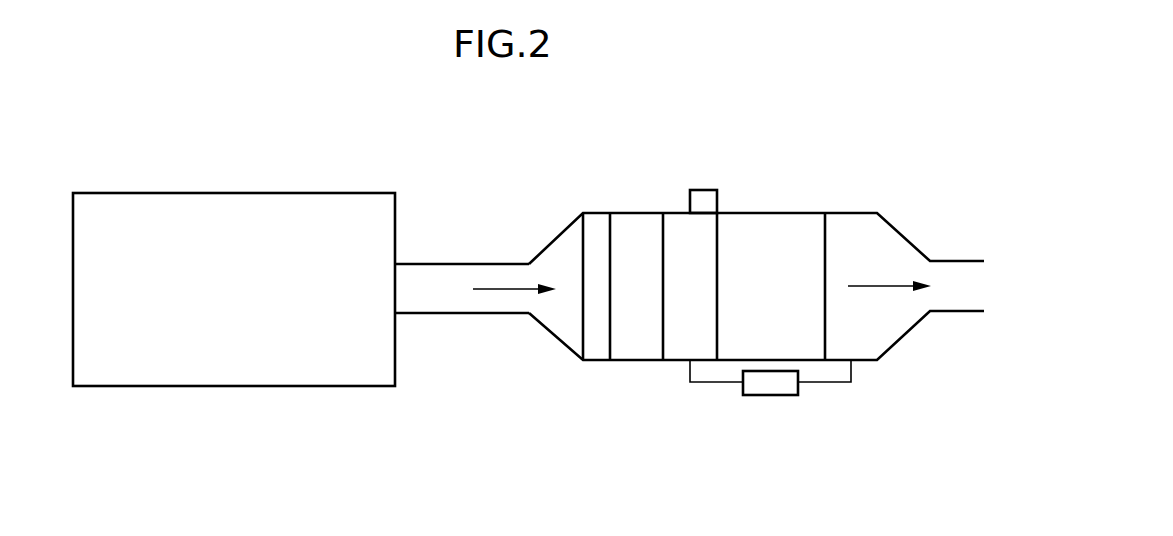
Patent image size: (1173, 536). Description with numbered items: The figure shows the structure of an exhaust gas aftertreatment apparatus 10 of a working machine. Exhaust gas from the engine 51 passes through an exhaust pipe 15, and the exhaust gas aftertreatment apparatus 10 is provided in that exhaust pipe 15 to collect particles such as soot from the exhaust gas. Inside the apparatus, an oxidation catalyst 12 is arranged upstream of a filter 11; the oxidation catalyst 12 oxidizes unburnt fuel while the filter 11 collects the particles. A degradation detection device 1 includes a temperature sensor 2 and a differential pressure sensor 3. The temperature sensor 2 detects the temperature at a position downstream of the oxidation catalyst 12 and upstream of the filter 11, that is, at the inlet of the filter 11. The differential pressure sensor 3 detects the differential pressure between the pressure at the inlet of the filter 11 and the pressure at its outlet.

The degradation detection device 1 is at (753, 282).
The temperature sensor 2 is at (702, 188).
The differential pressure sensor 3 is at (771, 395).
The exhaust gas aftertreatment apparatus 10 is at (578, 186).
The filter 11 is at (771, 286).
The oxidation catalyst 12 is at (636, 286).
The exhaust pipe 15 is at (477, 314).
The engine 51 is at (234, 289).